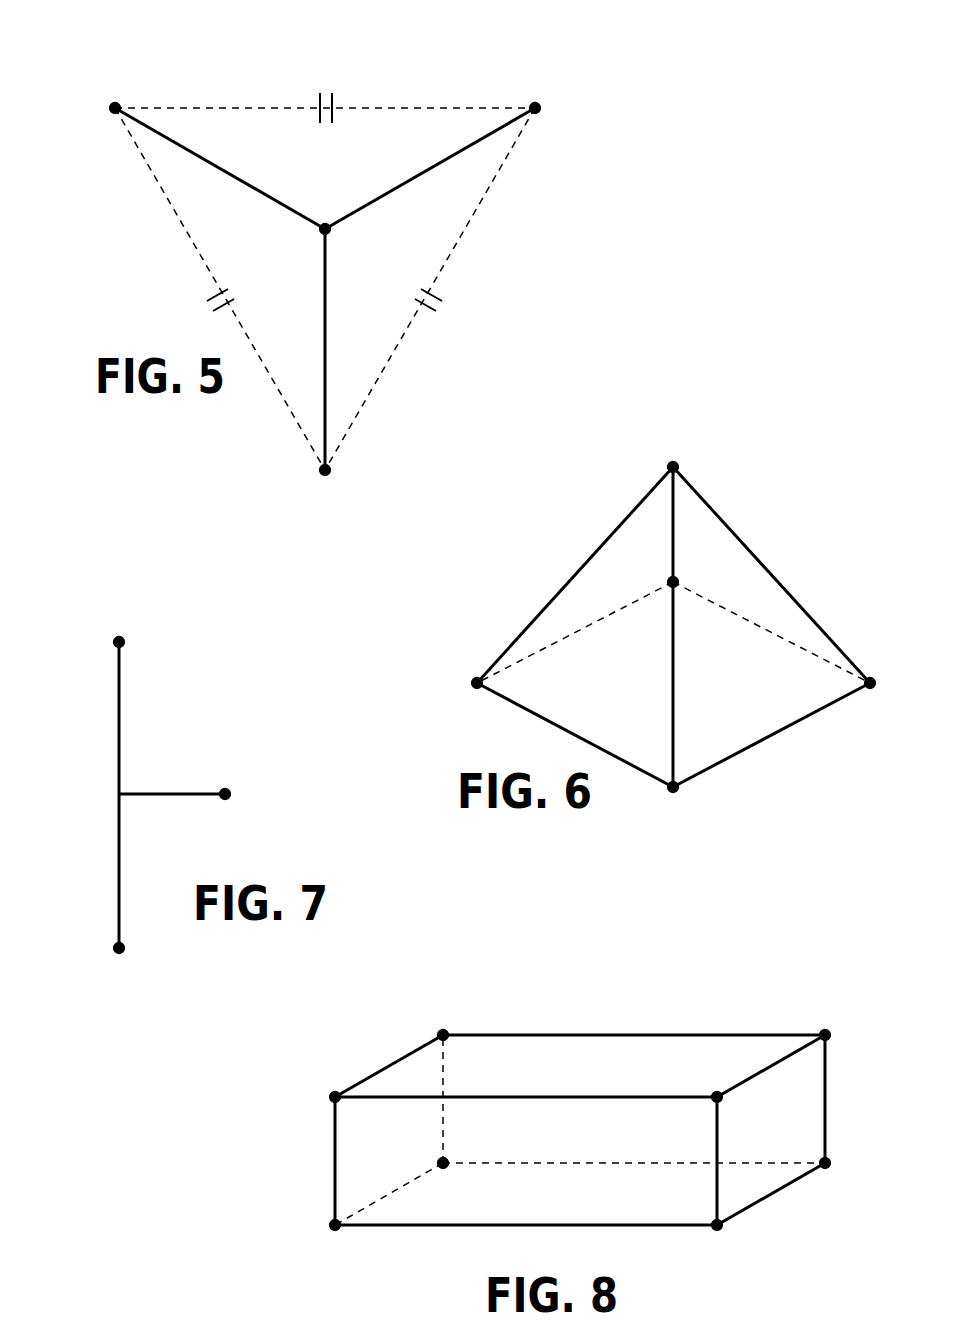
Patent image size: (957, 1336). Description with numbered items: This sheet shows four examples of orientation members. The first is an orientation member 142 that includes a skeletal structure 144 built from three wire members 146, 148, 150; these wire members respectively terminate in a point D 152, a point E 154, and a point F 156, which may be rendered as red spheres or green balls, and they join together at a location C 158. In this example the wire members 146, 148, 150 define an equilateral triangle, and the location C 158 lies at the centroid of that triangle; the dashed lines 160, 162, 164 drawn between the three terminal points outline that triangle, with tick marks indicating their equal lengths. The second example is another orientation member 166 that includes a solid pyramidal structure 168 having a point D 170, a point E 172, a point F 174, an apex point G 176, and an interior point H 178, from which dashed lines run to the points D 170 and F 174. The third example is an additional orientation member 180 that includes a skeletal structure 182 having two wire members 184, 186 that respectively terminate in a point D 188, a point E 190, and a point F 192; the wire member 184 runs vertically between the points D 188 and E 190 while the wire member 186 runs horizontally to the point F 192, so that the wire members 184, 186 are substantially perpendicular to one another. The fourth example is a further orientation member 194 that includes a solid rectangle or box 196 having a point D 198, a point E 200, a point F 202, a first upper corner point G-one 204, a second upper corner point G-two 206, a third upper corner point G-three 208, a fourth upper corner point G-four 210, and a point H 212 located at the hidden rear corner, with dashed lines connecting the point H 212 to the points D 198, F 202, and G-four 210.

In FIG. 5, the orientation member 142 is at (415, 80).
In FIG. 5, the skeletal structure 144 is at (442, 163).
In FIG. 5, the wire member 146 is at (248, 181).
In FIG. 5, the wire member 148 is at (321, 319).
In FIG. 5, the wire member 150 is at (403, 181).
In FIG. 5, the point D 152 is at (108, 109).
In FIG. 5, the point E 154 is at (318, 471).
In FIG. 5, the point F 156 is at (543, 109).
In FIG. 5, the location C 158 is at (335, 235).
In FIG. 5, the reference line D-F 160 is at (222, 104).
In FIG. 5, the reference line D-E 162 is at (189, 249).
In FIG. 5, the reference line F-E 164 is at (390, 371).
In FIG. 6, the orientation member 166 is at (808, 540).
In FIG. 6, the solid pyramidal structure 168 is at (576, 574).
In FIG. 6, the point D 170 is at (475, 673).
In FIG. 6, the point E 172 is at (683, 787).
In FIG. 6, the point F 174 is at (871, 673).
In FIG. 6, the point G 176 is at (683, 467).
In FIG. 6, the point H 178 is at (683, 582).
In FIG. 7, the orientation member 180 is at (220, 662).
In FIG. 7, the skeletal structure 182 is at (124, 740).
In FIG. 7, the wire member 184 is at (115, 765).
In FIG. 7, the wire member 186 is at (179, 800).
In FIG. 7, the point D 188 is at (110, 643).
In FIG. 7, the point E 190 is at (110, 949).
In FIG. 7, the point F 192 is at (226, 785).
In FIG. 8, the orientation member 194 is at (668, 980).
In FIG. 8, the solid rectangle or box 196 is at (503, 1205).
In FIG. 8, the point D 198 is at (325, 1226).
In FIG. 8, the point E 200 is at (730, 1229).
In FIG. 8, the point F 202 is at (835, 1164).
In FIG. 8, the point G1 204 is at (334, 1089).
In FIG. 8, the point G2 206 is at (727, 1099).
In FIG. 8, the point G3 208 is at (835, 1035).
In FIG. 8, the point G4 210 is at (449, 1041).
In FIG. 8, the point H 212 is at (435, 1163).